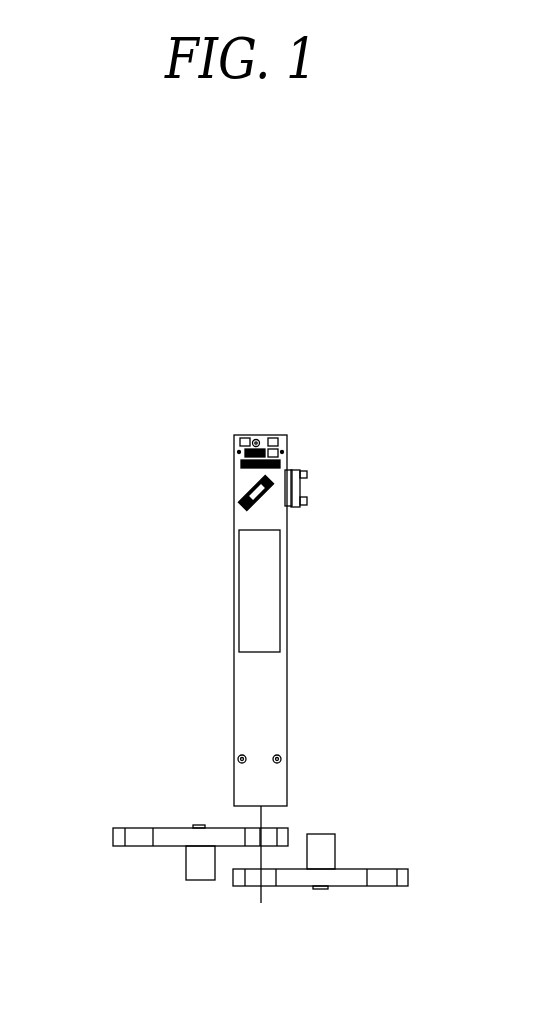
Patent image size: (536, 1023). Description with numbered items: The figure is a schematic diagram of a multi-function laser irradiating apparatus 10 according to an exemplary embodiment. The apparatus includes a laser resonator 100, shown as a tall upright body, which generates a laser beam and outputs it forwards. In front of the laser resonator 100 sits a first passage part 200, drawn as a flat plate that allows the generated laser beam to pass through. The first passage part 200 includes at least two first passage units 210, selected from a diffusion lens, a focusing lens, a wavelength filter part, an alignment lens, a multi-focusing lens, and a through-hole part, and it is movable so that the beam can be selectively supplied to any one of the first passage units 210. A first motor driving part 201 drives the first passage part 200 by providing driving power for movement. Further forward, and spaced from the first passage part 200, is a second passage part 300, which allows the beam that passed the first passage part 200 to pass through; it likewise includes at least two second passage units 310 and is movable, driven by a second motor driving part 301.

The multi-function laser irradiating apparatus 10 is at (235, 358).
The laser resonator 100 is at (265, 597).
The first passage part 200 is at (112, 806).
The first passage units 210 is at (143, 828).
The first motor driving part 201 is at (193, 864).
The second passage part 300 is at (379, 915).
The second motor driving part 301 is at (325, 843).
The second passage units 310 is at (252, 886).